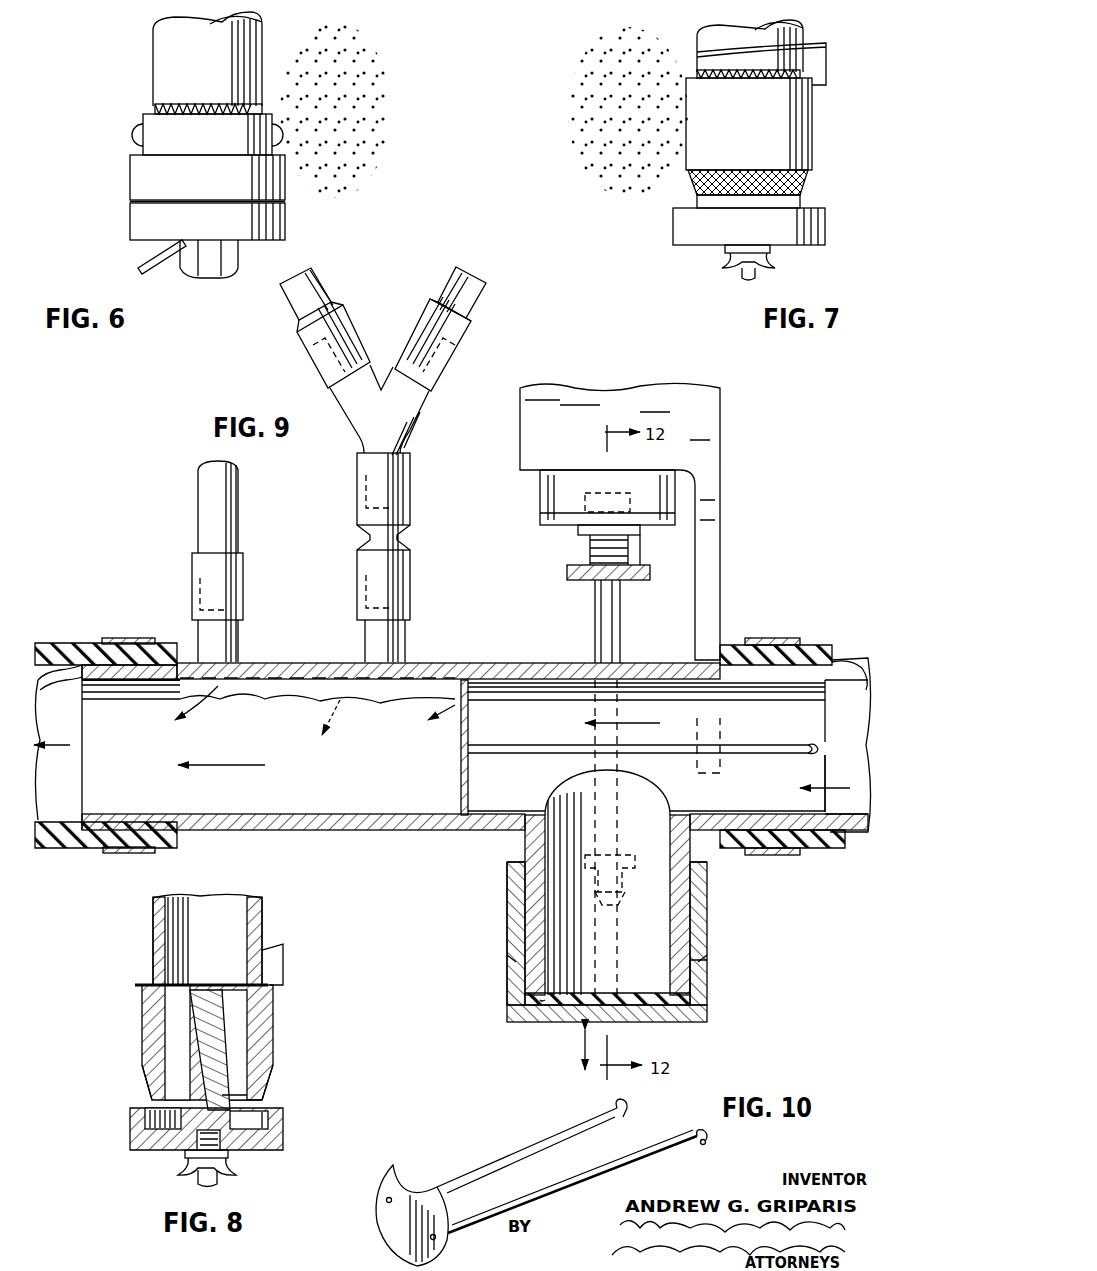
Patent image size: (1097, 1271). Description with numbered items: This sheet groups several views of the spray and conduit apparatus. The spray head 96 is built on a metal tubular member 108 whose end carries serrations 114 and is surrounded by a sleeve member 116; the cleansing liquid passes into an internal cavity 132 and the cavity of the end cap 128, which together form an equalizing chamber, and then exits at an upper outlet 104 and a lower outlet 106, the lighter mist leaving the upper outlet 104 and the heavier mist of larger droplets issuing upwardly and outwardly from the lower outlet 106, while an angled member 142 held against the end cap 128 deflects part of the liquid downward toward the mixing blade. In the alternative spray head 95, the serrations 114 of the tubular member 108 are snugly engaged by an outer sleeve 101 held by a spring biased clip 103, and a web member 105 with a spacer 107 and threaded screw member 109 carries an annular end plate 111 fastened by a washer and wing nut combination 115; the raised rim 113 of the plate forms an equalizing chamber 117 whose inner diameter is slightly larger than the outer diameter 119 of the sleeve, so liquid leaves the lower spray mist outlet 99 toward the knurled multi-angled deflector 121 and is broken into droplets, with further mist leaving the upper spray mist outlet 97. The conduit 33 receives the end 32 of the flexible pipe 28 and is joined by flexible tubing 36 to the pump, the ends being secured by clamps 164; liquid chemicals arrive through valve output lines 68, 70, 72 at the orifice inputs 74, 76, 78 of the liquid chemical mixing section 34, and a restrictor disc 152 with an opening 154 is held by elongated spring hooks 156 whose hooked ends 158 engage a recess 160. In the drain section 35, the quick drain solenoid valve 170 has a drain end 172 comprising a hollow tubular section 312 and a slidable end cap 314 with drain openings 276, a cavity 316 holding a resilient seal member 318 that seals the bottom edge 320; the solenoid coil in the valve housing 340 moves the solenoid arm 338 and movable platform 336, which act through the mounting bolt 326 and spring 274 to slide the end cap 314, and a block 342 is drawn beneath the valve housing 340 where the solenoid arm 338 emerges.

In FIG. 10, the flexible pipe 28 is at (858, 660).
In FIG. 10, the end of flexible pipe 32 is at (822, 622).
In FIG. 10, the conduit 33 is at (312, 822).
In FIG. 10, the liquid chemical mixing section 34 is at (256, 800).
In FIG. 10, the drain section 35 is at (650, 698).
In FIG. 10, the flexible tubing 36 is at (50, 655).
In FIG. 9, the valve output line 68 is at (480, 300).
In FIG. 9, the valve output line 70 is at (292, 300).
In FIG. 9, the valve output line 72 is at (198, 507).
In FIG. 9, the orifice input 74 is at (406, 641).
In FIG. 9, the orifice input 76 is at (380, 418).
In FIG. 9, the orifice input 78 is at (240, 641).
In FIG. 7, the spray head 95 is at (814, 138).
In FIG. 6, the spray head 96 is at (150, 82).
In FIG. 7, the upper spray mist outlet 97 is at (795, 76).
In FIG. 7, the lower spray mist outlet 99 is at (802, 200).
In FIG. 7, the outer sleeve 101 is at (808, 150).
In FIG. 8, the outer sleeve 101 is at (142, 1025).
In FIG. 7, the spring biased clip 103 is at (822, 68).
In FIG. 8, the spring biased clip 103 is at (286, 962).
In FIG. 6, the upper outlet 104 is at (146, 118).
In FIG. 8, the web member 105 is at (200, 1120).
In FIG. 6, the lower outlet 106 is at (142, 202).
In FIG. 8, the spacer 107 is at (225, 1152).
In FIG. 6, the tubular member 108 is at (166, 42).
In FIG. 7, the tubular member 108 is at (798, 32).
In FIG. 8, the tubular member 108 is at (152, 920).
In FIG. 7, the threaded screw member 109 is at (745, 276).
In FIG. 8, the threaded screw member 109 is at (220, 1182).
In FIG. 7, the annular end plate 111 is at (814, 240).
In FIG. 8, the annular end plate 111 is at (132, 1140).
In FIG. 8, the raised rim 113 is at (148, 1118).
In FIG. 6, the serrations 114 is at (157, 106).
In FIG. 8, the serrations 114 is at (150, 975).
In FIG. 7, the washer and wing nut combination 115 is at (728, 260).
In FIG. 8, the washer and wing nut combination 115 is at (207, 1162).
In FIG. 6, the sleeve member 116 is at (133, 176).
In FIG. 8, the equalizing chamber 117 is at (268, 1120).
In FIG. 8, the outer diameter 119 is at (262, 1100).
In FIG. 7, the multi-angled deflector 121 is at (806, 176).
In FIG. 8, the multi-angled deflector 121 is at (148, 1080).
In FIG. 6, the end cap 128 is at (133, 232).
In FIG. 6, the internal cavity 132 is at (240, 266).
In FIG. 6, the angled member 142 is at (142, 262).
In FIG. 10, the restrictor disc 152 is at (461, 770).
In FIG. 10, the opening 154 is at (485, 684).
In FIG. 10, the elongated spring hook 156 is at (762, 745).
In FIG. 10, the hooked end 158 is at (820, 752).
In FIG. 10, the recess 160 is at (824, 760).
In FIG. 10, the clamp 164 is at (128, 638).
In FIG. 10, the quick drain solenoid valve 170 is at (725, 545).
In FIG. 10, the drain end 172 is at (713, 930).
In FIG. 10, the spring 274 is at (641, 547).
In FIG. 10, the drain opening 276 is at (705, 965).
In FIG. 10, the hollow tubular section 312 is at (525, 845).
In FIG. 10, the slidable end cap 314 is at (507, 905).
In FIG. 10, the cavity 316 is at (545, 1005).
In FIG. 10, the resilient seal member 318 is at (662, 990).
In FIG. 10, the bottom edge 320 is at (700, 1006).
In FIG. 10, the mounting bolt 326 is at (594, 625).
In FIG. 10, the movable platform 336 is at (620, 582).
In FIG. 10, the solenoid arm 338 is at (578, 545).
In FIG. 10, the valve housing 340 is at (708, 449).
In FIG. 10, the block 342 is at (540, 507).